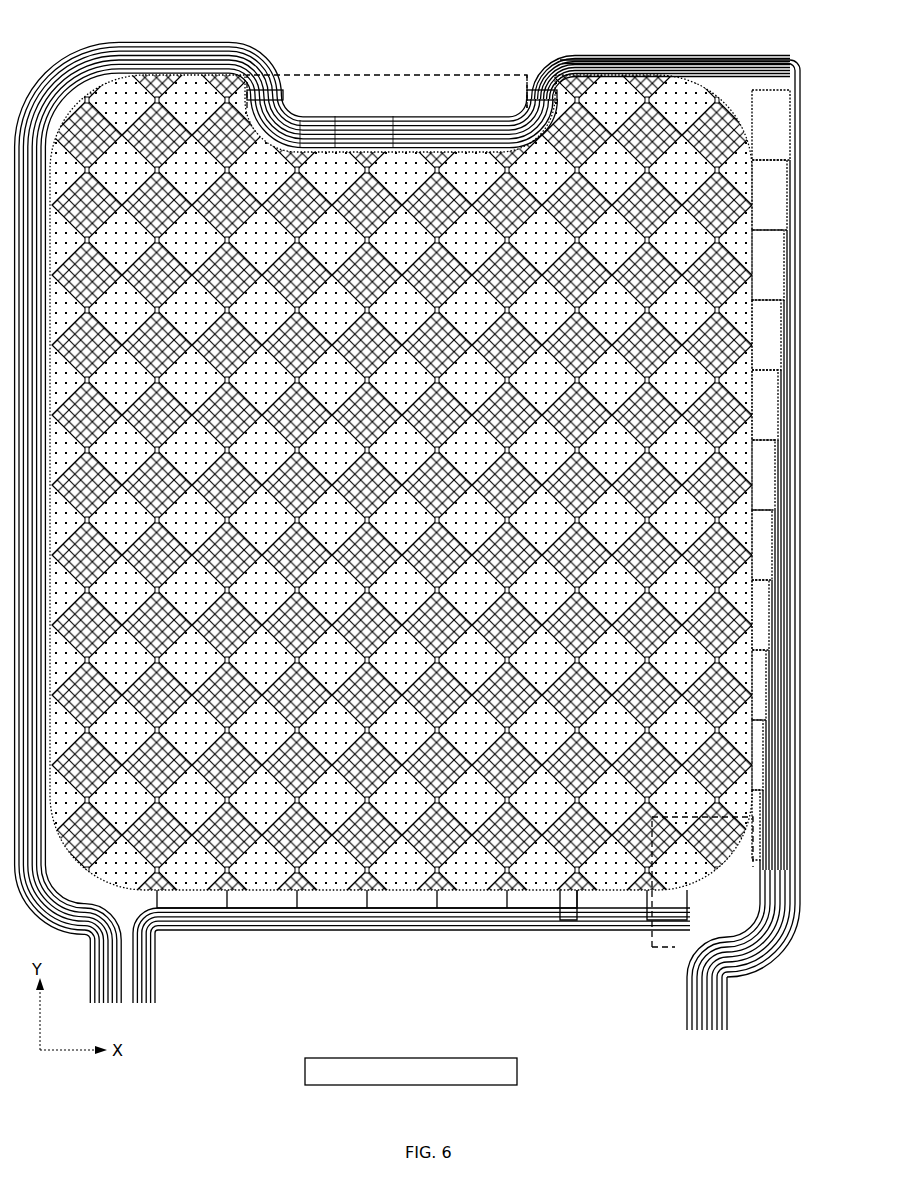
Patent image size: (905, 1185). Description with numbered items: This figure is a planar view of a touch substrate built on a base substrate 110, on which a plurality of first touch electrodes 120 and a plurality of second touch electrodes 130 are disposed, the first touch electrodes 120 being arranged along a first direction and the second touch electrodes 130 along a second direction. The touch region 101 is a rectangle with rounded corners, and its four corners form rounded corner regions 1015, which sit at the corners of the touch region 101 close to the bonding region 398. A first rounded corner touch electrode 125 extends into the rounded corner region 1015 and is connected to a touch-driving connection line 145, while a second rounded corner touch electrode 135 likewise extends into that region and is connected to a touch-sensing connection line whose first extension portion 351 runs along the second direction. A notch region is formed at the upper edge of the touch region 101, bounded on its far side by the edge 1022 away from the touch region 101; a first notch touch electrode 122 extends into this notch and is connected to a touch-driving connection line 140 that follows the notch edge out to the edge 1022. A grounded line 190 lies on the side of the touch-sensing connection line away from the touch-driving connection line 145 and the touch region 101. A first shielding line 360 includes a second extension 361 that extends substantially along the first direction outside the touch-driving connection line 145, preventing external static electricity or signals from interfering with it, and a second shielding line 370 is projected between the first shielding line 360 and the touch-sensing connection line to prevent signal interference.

The touch region 101 is at (401, 527).
The base substrate 110 is at (700, 23).
The first touch electrodes 120 is at (466, 886).
The first notch touch electrode 122 is at (300, 118).
The first rounded corner touch electrode 125 is at (660, 925).
The second touch electrodes 130 is at (400, 905).
The second rounded corner touch electrode 135 is at (650, 902).
The touch-driving connection line 140 is at (335, 143).
The touch-driving connection line 145 is at (740, 870).
The grounded line 190 is at (520, 96).
The edge of the notch region away from the touch region 1022 is at (500, 72).
The rounded corner region 1015 is at (668, 952).
The first extension portion 351 is at (730, 1000).
The first shielding line 360 is at (780, 950).
The second extension 361 is at (298, 932).
The second shielding line 370 is at (790, 925).
The bonding region 398 is at (382, 1088).